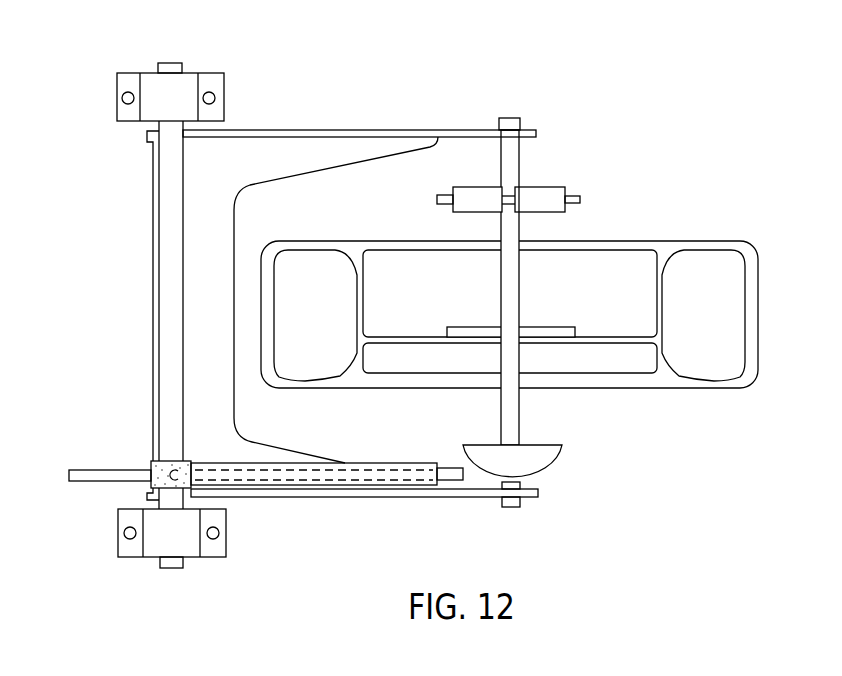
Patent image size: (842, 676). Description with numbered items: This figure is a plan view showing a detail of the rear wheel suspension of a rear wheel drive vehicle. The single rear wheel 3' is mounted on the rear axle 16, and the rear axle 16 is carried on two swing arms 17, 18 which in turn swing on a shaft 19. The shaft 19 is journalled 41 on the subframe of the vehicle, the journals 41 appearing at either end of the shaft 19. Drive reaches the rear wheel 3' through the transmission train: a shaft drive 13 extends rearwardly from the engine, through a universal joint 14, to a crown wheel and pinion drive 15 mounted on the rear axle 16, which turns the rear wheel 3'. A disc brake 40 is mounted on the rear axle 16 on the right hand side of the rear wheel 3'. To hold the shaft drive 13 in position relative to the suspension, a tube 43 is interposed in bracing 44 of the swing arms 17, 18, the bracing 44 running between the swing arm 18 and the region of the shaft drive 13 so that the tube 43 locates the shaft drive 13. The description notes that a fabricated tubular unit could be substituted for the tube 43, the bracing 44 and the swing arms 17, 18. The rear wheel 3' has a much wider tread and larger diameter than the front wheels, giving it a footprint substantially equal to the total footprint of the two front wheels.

The rear wheel 3' is at (526, 314).
The shaft drive 13 is at (85, 460).
The universal joint 14 is at (168, 472).
The crown wheel and pinion drive 15 is at (543, 458).
The rear axle 16 is at (513, 158).
The swing arm 17 is at (323, 492).
The swing arm 18 is at (321, 143).
The shaft 19 is at (167, 300).
The disc brake 40 is at (582, 199).
The journal 41 is at (180, 78).
The tube 43 is at (388, 476).
The bracing 44 is at (291, 170).